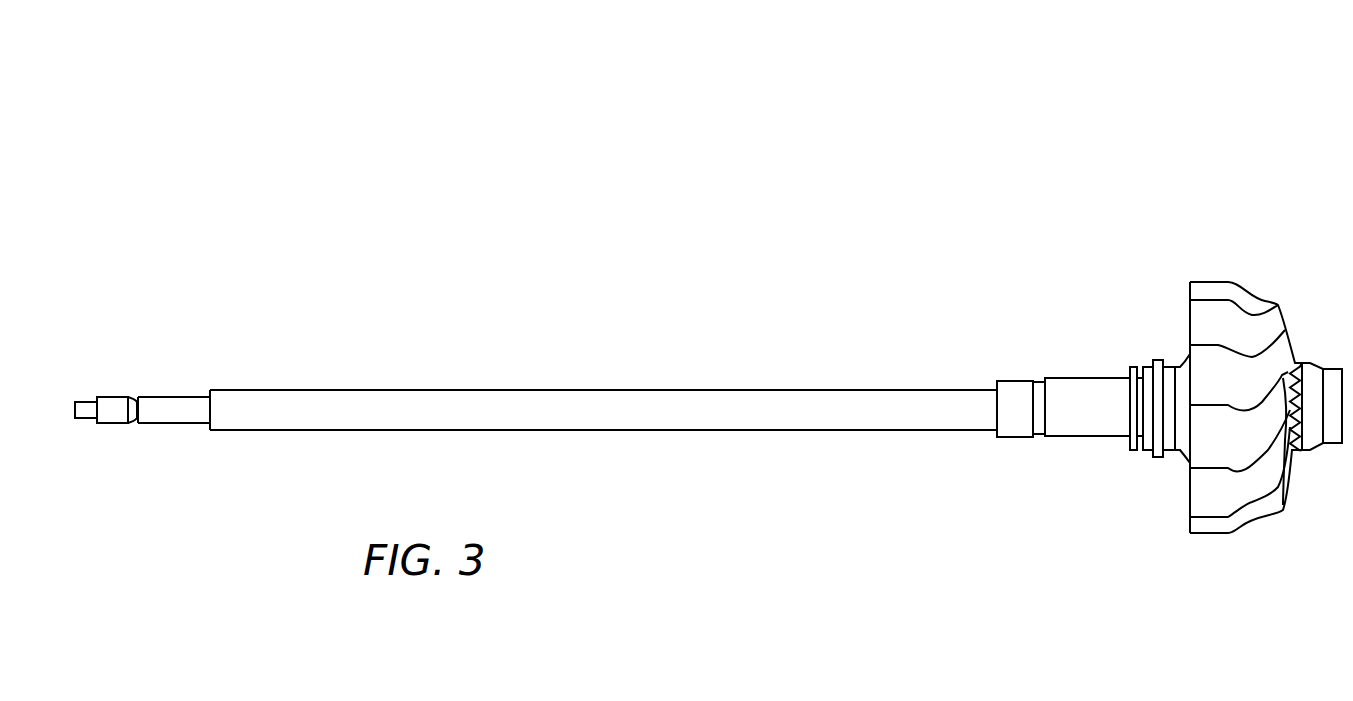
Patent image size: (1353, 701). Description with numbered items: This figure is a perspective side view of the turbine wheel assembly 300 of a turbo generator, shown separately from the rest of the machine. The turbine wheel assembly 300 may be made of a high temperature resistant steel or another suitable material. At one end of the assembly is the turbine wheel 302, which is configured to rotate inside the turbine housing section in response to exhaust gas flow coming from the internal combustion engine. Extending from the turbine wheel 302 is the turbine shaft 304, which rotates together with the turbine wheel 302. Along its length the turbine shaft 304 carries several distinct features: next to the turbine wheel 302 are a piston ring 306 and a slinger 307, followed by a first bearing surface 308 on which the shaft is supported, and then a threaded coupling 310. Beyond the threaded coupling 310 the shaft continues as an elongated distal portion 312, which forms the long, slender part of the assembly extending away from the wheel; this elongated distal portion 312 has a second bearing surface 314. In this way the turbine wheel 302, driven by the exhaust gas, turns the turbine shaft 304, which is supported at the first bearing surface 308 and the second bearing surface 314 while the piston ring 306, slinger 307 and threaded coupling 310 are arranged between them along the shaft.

The turbine wheel assembly 300 is at (966, 128).
The turbine wheel 302 is at (1208, 282).
The turbine shaft 304 is at (807, 400).
The piston ring 306 is at (1158, 360).
The slinger 307 is at (1131, 375).
The first bearing surface 308 is at (1060, 378).
The threaded coupling 310 is at (1017, 381).
The elongated distal portion 312 is at (209, 392).
The second bearing surface 314 is at (231, 392).